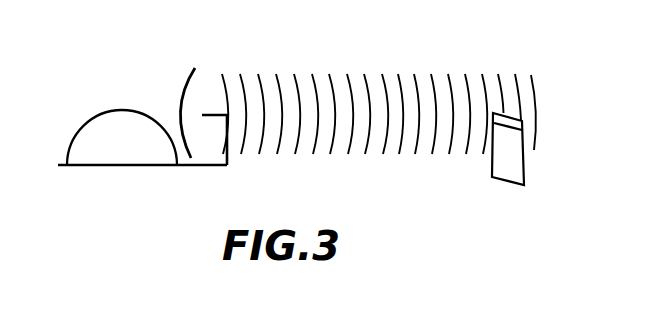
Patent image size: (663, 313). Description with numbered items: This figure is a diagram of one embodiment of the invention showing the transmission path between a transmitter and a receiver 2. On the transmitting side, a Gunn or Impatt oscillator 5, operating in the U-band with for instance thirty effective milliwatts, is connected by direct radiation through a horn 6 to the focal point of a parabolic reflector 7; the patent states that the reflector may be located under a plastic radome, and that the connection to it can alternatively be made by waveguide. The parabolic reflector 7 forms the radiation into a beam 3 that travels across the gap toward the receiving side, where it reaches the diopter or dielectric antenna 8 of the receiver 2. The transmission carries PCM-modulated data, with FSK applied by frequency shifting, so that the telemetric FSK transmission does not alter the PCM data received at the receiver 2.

The receiver 2 is at (518, 173).
The beam 3 is at (353, 93).
The Gunn or Impatt oscillator 5 is at (85, 127).
The horn 6 is at (212, 113).
The parabolic reflector 7 is at (182, 90).
The diopter or dielectric antenna 8 is at (507, 114).